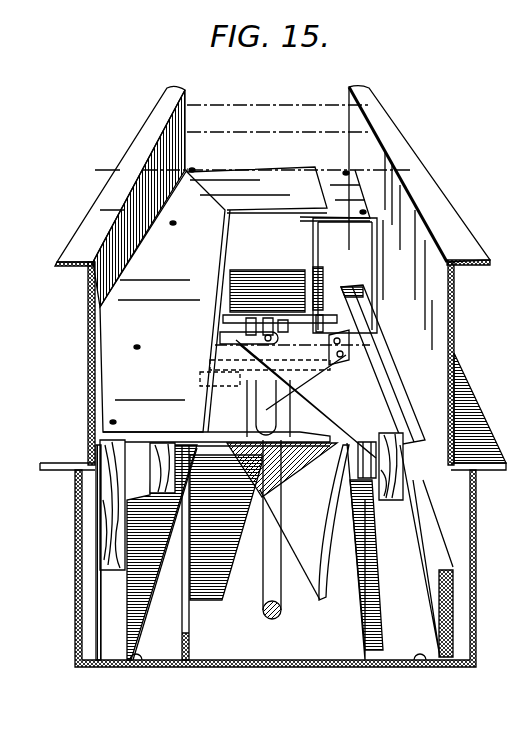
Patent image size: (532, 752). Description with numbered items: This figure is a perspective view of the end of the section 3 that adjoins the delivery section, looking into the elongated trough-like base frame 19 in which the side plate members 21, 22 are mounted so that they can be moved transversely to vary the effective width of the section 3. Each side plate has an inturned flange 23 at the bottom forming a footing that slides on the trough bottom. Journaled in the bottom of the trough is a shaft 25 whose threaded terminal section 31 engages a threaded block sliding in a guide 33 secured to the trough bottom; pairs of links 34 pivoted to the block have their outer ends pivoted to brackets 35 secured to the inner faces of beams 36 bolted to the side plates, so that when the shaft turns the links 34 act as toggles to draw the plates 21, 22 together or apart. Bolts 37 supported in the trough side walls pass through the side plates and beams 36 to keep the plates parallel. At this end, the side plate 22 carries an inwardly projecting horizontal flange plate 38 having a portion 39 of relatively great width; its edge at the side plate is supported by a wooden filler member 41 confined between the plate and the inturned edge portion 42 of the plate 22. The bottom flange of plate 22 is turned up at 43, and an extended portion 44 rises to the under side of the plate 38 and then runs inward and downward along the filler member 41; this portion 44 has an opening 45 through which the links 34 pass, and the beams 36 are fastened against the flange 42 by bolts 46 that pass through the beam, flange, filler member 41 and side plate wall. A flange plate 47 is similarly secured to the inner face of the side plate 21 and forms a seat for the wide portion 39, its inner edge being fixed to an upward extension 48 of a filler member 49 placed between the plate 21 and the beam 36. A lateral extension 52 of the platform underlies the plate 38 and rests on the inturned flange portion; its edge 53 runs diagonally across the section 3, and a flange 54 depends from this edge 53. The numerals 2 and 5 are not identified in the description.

The deck 2 is at (244, 100).
The section 3 is at (127, 92).
The ramp member 5 is at (383, 364).
The base frame 19 is at (298, 640).
The side plate member 21 is at (454, 331).
The side plate member 22 is at (90, 348).
The inturned flange 23 is at (140, 668).
The shaft 25 is at (268, 580).
The threaded terminal section 31 is at (268, 318).
The guide 33 is at (256, 315).
The link 34 is at (242, 337).
The bracket 35 is at (348, 345).
The beam 36 is at (165, 455).
The bolt 37 is at (240, 318).
The horizontal flange plate 38 is at (172, 285).
The portion of relatively great width 39 is at (257, 200).
The filler member 41 is at (112, 508).
The inturned edge portion 42 is at (123, 570).
The upturned flange portion 43 is at (190, 628).
The extended portion 44 is at (205, 517).
The opening 45 is at (199, 378).
The bolt 46 is at (329, 310).
The flange plate 47 is at (326, 192).
The upward extension 48 is at (365, 243).
The filler member 49 is at (445, 548).
The lateral extension 52 is at (213, 432).
The edge 53 is at (282, 380).
The flange 54 is at (335, 553).